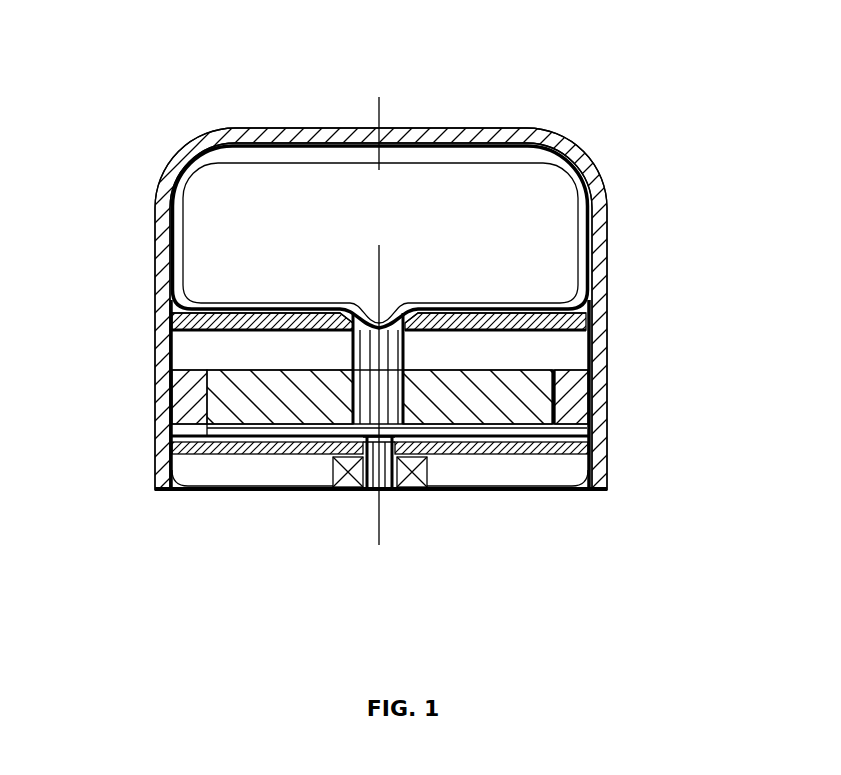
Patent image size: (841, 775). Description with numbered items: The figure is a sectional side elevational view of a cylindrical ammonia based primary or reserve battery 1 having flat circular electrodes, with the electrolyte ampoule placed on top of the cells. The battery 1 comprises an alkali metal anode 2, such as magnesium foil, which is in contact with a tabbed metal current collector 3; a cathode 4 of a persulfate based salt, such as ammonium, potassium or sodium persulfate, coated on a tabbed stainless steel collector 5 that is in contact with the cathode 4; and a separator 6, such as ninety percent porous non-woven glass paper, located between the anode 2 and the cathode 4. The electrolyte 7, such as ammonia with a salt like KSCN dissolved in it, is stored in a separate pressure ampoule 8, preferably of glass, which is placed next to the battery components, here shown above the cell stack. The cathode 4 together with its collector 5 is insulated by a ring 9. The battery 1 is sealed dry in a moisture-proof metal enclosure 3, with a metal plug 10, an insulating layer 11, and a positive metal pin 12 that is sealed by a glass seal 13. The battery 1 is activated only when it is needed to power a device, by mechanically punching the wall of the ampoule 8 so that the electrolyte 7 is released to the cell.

The battery 1 is at (203, 645).
The anode 2 is at (173, 322).
The tabbed metal current collector 3 is at (607, 248).
The cathode 4 is at (220, 400).
The tabbed stainless steel collector 5 is at (280, 432).
The separator 6 is at (567, 343).
The electrolyte 7 is at (213, 222).
The pressure ampoule 8 is at (492, 153).
The ring 9 is at (585, 403).
The metal plug 10 is at (497, 477).
The insulating layer 11 is at (157, 447).
The positive metal pin 12 is at (366, 492).
The glass seal 13 is at (410, 490).